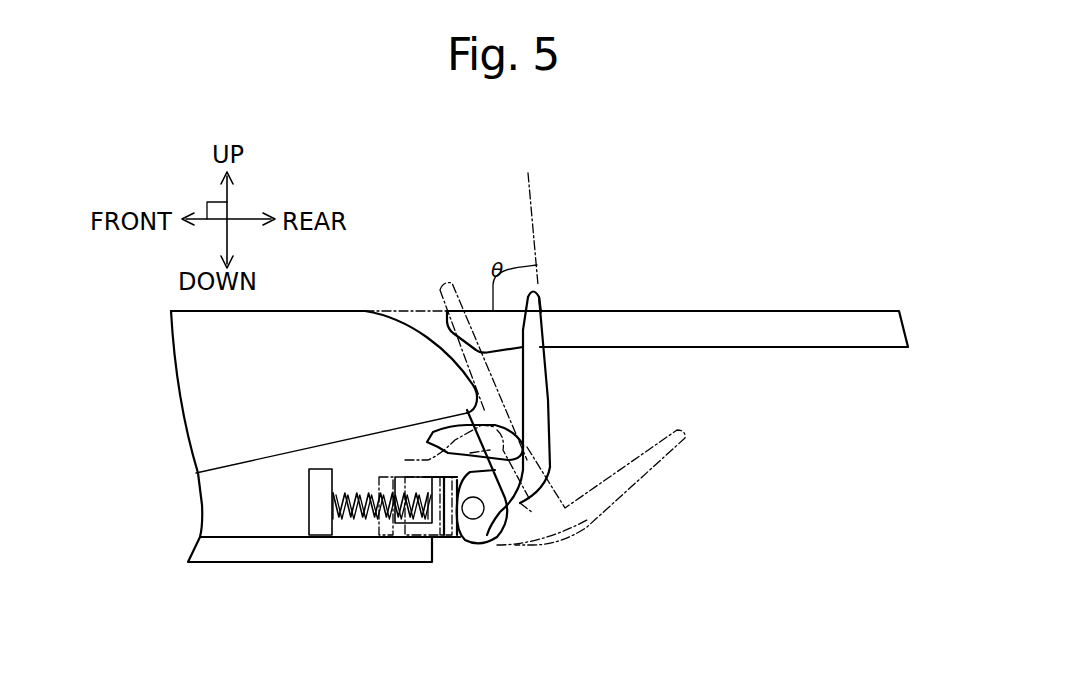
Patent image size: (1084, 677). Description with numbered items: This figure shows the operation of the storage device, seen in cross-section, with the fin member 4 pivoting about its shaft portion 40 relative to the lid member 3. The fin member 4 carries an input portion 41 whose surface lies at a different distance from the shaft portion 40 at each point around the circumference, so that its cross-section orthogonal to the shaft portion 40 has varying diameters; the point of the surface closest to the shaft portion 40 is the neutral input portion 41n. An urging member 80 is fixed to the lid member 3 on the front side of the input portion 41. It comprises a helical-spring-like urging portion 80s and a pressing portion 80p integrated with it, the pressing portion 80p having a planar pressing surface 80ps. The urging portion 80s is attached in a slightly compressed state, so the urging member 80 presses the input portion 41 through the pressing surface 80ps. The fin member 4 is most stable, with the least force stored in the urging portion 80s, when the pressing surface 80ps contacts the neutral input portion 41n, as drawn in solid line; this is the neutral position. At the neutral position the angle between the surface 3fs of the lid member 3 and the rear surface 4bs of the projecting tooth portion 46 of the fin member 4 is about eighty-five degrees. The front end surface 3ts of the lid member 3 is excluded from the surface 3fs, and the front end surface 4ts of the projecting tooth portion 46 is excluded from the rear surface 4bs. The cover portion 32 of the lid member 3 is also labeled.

The lid member 3 is at (228, 552).
The surface of the lid member 3fs is at (255, 311).
The cover portion 32 is at (312, 323).
The front end surface of the lid member 3ts is at (455, 363).
The fin member 4 is at (537, 377).
The front end surface of the projecting tooth portion 4ts is at (538, 278).
The rear surface of the fin member 4bs is at (541, 307).
The projecting tooth portion 46 is at (540, 332).
The shaft portion 40 is at (473, 512).
The input portion 41 is at (500, 520).
The neutral input portion 41n is at (443, 540).
The urging member 80 is at (410, 515).
The urging portion 80s is at (357, 520).
The pressing portion 80p is at (413, 538).
The pressing surface 80ps is at (457, 540).